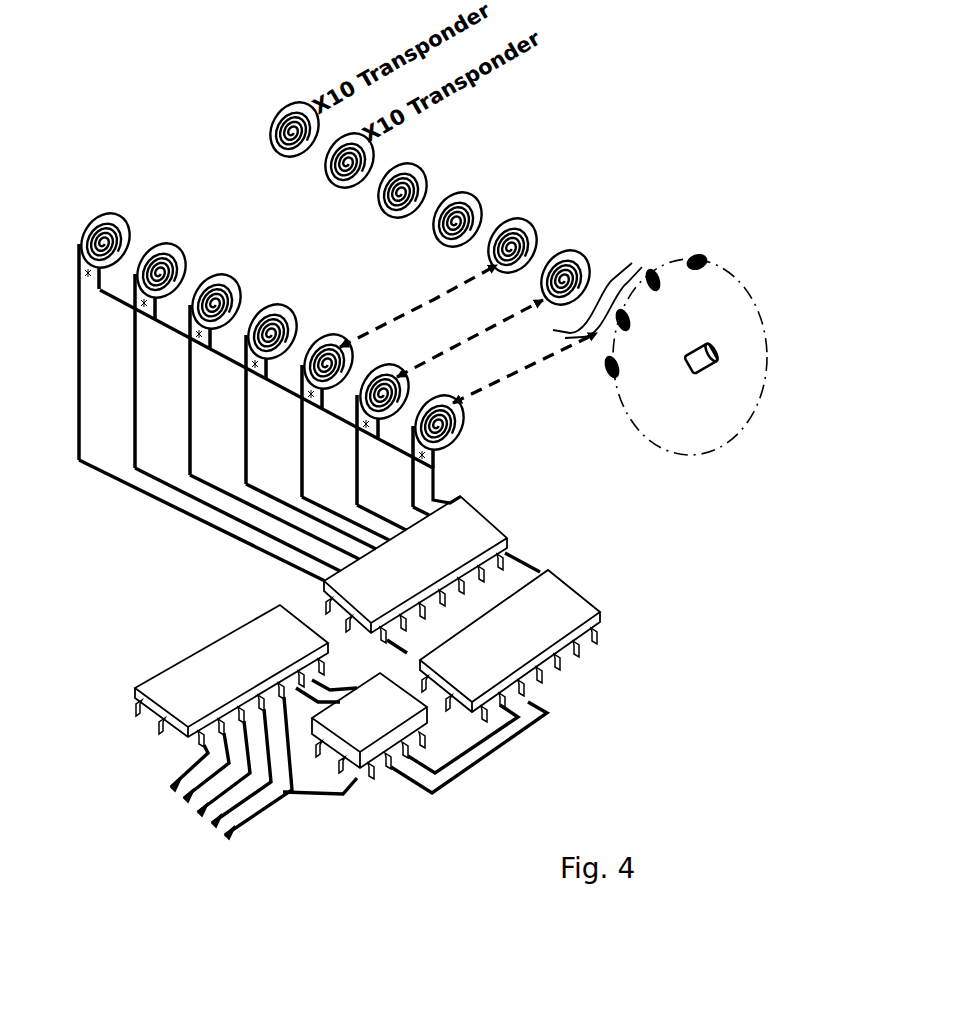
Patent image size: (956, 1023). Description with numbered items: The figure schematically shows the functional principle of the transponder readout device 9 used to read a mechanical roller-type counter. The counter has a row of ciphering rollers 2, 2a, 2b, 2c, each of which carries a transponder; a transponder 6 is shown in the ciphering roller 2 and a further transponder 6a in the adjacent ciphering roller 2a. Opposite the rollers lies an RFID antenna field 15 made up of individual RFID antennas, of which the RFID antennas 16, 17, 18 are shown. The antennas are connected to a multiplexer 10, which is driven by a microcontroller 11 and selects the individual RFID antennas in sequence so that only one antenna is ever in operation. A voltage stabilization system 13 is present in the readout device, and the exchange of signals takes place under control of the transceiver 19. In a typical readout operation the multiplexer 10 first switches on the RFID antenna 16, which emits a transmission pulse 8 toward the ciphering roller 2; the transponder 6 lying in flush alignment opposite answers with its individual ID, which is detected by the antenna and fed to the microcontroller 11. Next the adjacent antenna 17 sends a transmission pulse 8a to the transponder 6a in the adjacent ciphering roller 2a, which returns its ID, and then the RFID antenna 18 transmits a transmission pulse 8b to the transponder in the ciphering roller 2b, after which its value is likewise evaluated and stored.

The ciphering roller 2 is at (727, 327).
The adjacent ciphering roller 2a is at (710, 120).
The ciphering roller 2b is at (648, 98).
The ciphering roller 2c is at (613, 67).
The transponder 6 is at (262, 108).
The transponder 6a is at (577, 265).
The transmission pulse 8 is at (518, 373).
The transmission pulse 8a is at (463, 342).
The transmission pulse 8b is at (433, 300).
The transponder readout device 9 is at (410, 675).
The multiplexer 10 is at (468, 530).
The microcontroller 11 is at (170, 675).
The voltage stabilization system 13 is at (360, 745).
The RFID antenna field 15 is at (81, 195).
The RFID antenna 16 is at (461, 433).
The RFID antenna 17 is at (390, 372).
The RFID antenna 18 is at (326, 340).
The transceiver 19 is at (556, 662).